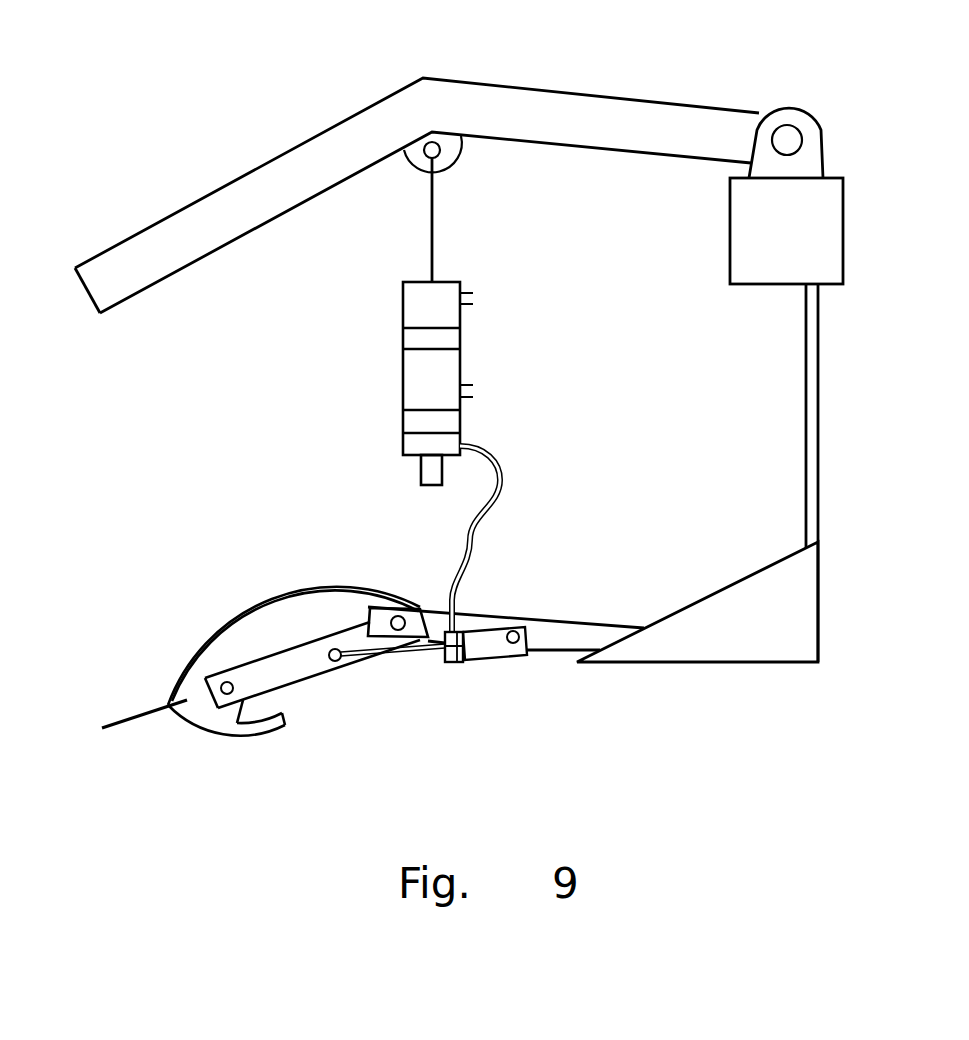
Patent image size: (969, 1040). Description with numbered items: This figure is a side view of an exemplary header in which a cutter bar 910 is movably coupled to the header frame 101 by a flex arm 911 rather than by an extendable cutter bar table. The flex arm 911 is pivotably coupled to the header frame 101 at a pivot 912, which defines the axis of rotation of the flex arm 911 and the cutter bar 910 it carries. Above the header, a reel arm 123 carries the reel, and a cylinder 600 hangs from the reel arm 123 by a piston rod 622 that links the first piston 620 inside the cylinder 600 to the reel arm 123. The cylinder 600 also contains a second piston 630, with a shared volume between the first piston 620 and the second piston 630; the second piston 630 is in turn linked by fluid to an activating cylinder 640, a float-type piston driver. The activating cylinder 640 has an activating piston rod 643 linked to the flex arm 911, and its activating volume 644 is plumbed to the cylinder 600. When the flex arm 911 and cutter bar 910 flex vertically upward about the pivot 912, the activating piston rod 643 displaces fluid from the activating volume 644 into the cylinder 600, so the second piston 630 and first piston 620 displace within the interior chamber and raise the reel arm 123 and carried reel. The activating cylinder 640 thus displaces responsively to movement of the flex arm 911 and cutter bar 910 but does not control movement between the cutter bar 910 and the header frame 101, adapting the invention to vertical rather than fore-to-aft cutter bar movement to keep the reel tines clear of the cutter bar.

The reel arm 123 is at (476, 83).
The header frame 101 is at (573, 630).
The cylinder 600 is at (376, 363).
The piston rod 622 is at (440, 224).
The first piston 620 is at (460, 340).
The second piston 630 is at (460, 421).
The activating cylinder 640 is at (519, 662).
The activating volume 644 is at (455, 661).
The activating piston rod 643 is at (424, 652).
The pivot 912 is at (398, 613).
The flex arm 911 is at (297, 680).
The cutter bar 910 is at (123, 719).